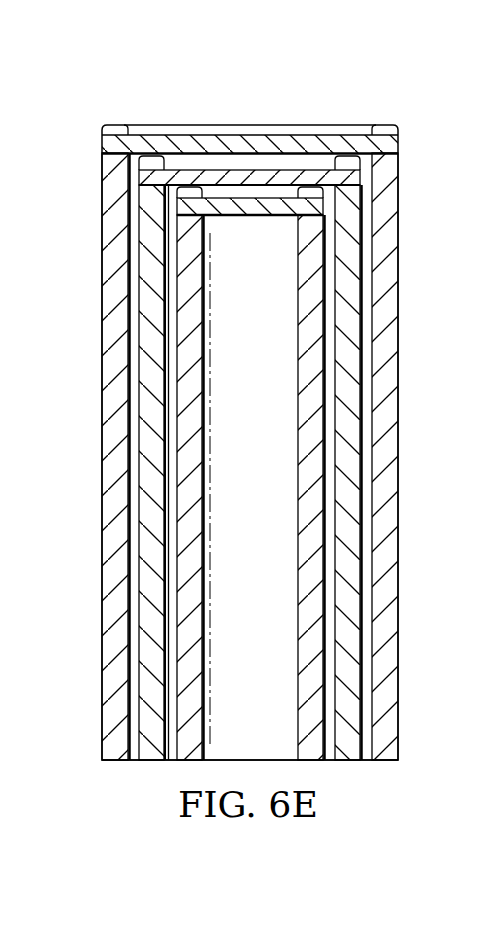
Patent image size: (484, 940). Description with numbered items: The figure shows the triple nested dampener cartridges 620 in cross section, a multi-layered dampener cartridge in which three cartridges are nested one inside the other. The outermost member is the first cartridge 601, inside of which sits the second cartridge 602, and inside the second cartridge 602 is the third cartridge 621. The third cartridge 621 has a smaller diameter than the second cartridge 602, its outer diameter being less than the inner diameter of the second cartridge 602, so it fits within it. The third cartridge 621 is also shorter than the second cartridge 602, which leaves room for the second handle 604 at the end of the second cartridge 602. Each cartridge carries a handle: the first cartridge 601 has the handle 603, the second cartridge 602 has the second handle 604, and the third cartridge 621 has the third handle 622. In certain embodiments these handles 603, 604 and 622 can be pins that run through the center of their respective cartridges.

The triple nested dampener cartridges 620 is at (363, 60).
The first cartridge 601 is at (112, 435).
The handle 603 is at (200, 143).
The second handle 604 is at (277, 177).
The second cartridge 602 is at (350, 750).
The handle 622 is at (247, 207).
The third cartridge 621 is at (193, 550).